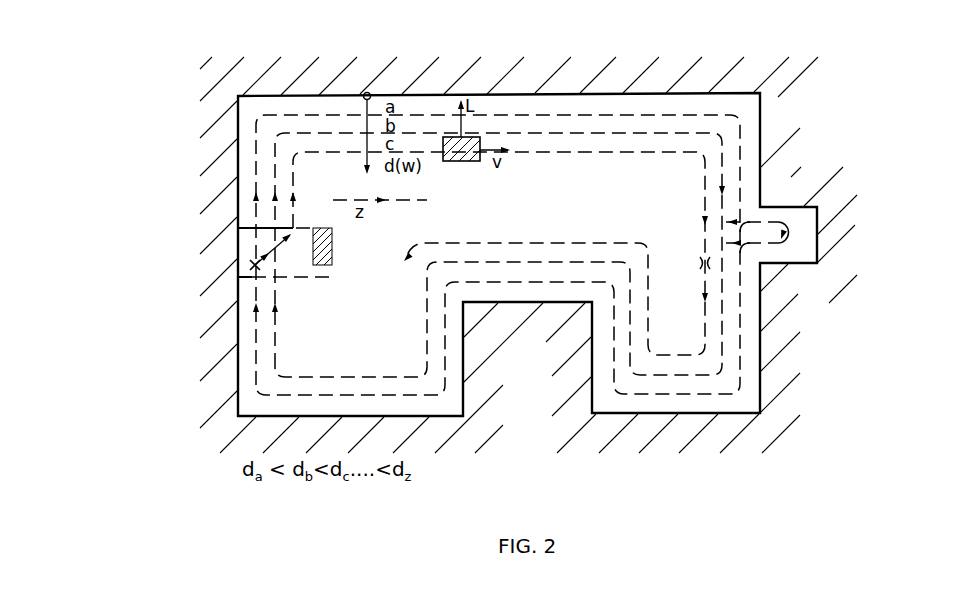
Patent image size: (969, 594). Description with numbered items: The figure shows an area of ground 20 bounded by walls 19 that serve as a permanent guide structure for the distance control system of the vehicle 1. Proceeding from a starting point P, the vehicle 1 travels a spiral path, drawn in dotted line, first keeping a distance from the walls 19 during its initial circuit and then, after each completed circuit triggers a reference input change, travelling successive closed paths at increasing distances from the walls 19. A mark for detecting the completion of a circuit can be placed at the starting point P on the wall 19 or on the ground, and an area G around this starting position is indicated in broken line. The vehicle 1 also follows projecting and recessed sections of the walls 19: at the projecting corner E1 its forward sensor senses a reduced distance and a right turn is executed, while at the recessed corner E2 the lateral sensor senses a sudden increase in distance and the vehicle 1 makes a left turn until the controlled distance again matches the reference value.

The vehicle 1 is at (465, 162).
The walls 19 is at (690, 416).
The area of ground 20 is at (653, 162).
The starting point P is at (251, 264).
The area around the starting position G is at (330, 246).
The corner E1 is at (771, 107).
The recessed corner E2 is at (771, 195).